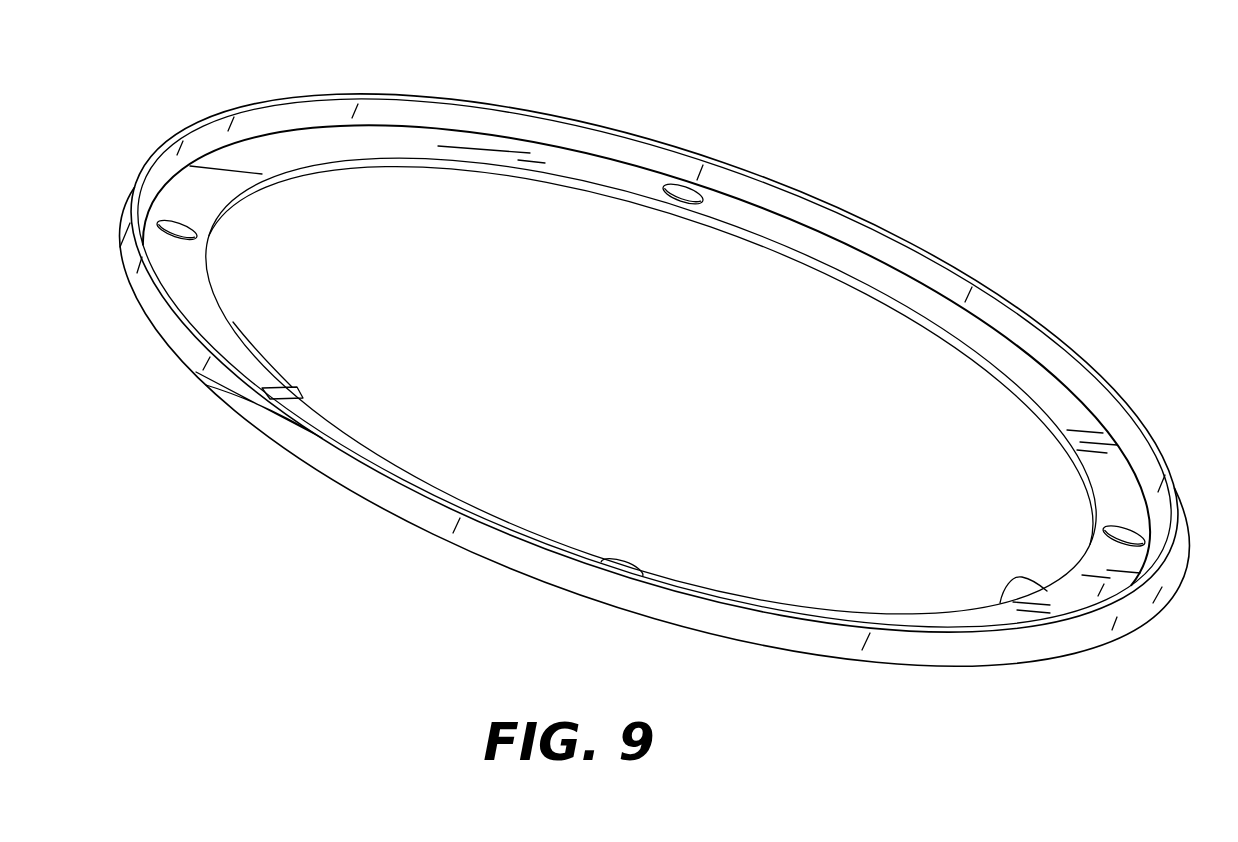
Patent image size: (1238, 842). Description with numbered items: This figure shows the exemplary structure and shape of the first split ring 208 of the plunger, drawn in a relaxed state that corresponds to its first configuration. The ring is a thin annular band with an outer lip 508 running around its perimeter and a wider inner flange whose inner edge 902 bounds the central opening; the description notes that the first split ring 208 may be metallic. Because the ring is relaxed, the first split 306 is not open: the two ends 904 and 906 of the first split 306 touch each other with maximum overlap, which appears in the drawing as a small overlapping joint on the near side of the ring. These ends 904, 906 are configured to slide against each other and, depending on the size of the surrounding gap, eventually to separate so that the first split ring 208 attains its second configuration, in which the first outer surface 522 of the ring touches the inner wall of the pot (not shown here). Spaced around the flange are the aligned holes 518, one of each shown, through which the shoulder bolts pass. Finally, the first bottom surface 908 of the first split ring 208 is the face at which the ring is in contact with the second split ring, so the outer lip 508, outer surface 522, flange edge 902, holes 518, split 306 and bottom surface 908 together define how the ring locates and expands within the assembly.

The first split ring 208 is at (645, 390).
The outer lip of ring 508 is at (380, 112).
The aligned holes 518 is at (190, 224).
The inner flange edge 902 is at (200, 280).
The end of the first split 904 is at (292, 383).
The end of the first split 906 is at (300, 393).
The first split 306 is at (253, 408).
The first outer surface 522 is at (402, 503).
The first bottom surface 908 is at (1040, 585).